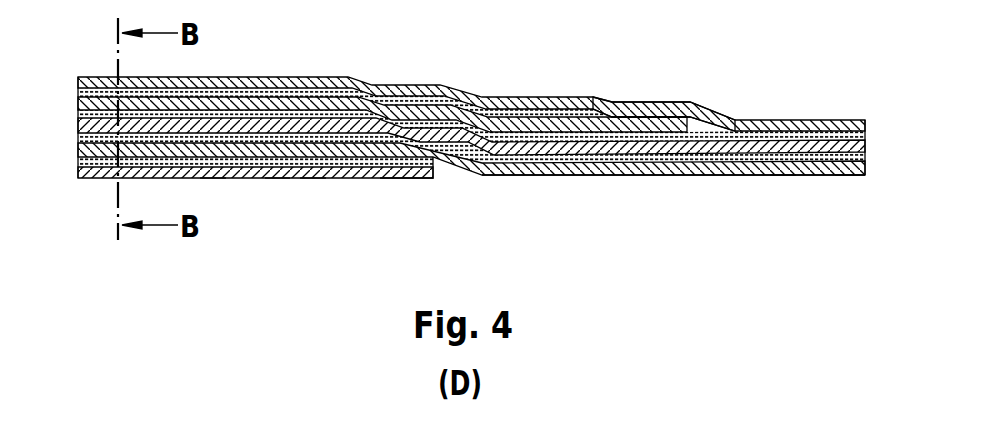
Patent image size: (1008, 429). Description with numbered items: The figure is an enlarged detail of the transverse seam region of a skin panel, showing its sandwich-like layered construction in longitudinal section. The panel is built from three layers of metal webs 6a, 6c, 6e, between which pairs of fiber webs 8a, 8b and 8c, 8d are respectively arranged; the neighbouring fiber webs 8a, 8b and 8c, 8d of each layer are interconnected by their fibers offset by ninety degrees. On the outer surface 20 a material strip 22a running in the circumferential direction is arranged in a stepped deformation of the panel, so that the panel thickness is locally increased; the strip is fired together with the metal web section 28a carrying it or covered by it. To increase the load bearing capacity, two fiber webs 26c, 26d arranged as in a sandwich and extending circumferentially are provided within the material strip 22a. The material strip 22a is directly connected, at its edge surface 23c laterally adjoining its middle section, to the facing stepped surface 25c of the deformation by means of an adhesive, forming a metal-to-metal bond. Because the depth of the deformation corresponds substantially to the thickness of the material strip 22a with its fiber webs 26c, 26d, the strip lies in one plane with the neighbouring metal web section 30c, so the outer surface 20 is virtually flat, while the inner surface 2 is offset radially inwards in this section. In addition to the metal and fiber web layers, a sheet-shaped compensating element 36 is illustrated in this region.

The inner surface 2 is at (653, 102).
The metal web 6a is at (102, 83).
The metal web 6c is at (298, 127).
The metal web 6e is at (95, 172).
The sheet-shaped compensating element 36 is at (252, 105).
The fiber web 8a is at (780, 126).
The fiber web 8b is at (843, 126).
The fiber web 8c is at (845, 176).
The fiber web 8d is at (782, 176).
The outer surface 20 is at (728, 193).
The material strip 22a is at (240, 172).
The edge surface 23c is at (452, 172).
The stepped surface 25c is at (390, 178).
The fiber web 26c is at (277, 178).
The fiber web 26d is at (312, 178).
The metal web section 28a is at (212, 178).
The metal web section 30c is at (510, 172).